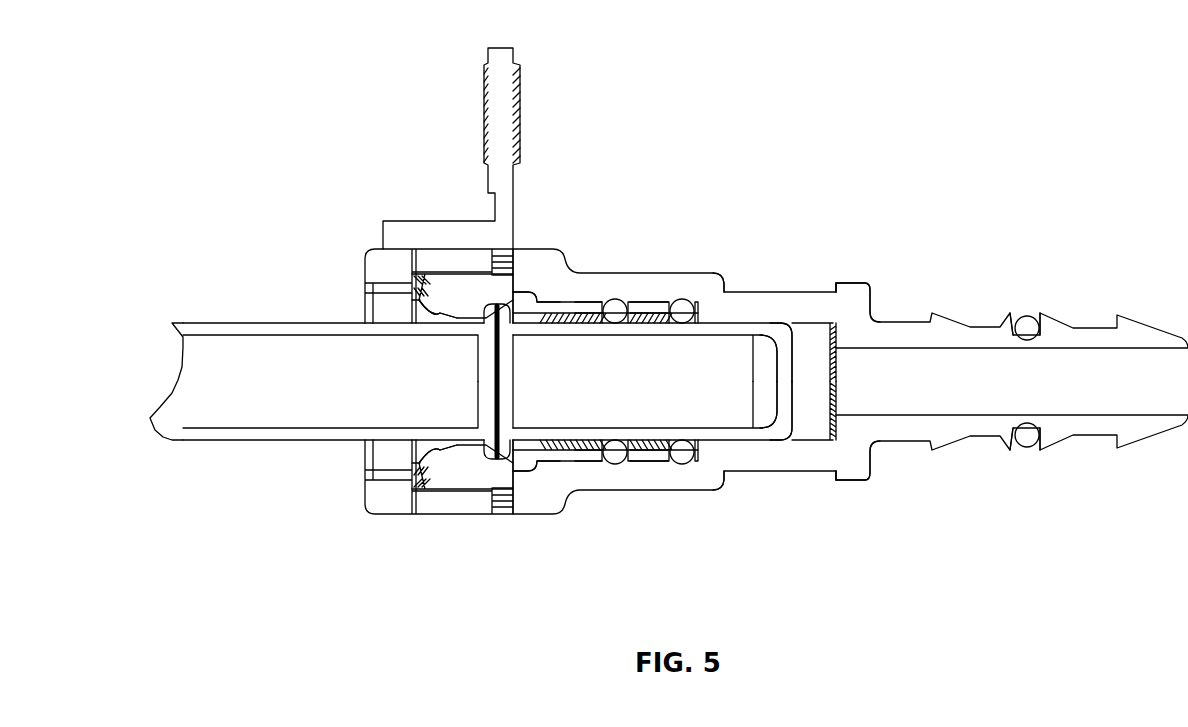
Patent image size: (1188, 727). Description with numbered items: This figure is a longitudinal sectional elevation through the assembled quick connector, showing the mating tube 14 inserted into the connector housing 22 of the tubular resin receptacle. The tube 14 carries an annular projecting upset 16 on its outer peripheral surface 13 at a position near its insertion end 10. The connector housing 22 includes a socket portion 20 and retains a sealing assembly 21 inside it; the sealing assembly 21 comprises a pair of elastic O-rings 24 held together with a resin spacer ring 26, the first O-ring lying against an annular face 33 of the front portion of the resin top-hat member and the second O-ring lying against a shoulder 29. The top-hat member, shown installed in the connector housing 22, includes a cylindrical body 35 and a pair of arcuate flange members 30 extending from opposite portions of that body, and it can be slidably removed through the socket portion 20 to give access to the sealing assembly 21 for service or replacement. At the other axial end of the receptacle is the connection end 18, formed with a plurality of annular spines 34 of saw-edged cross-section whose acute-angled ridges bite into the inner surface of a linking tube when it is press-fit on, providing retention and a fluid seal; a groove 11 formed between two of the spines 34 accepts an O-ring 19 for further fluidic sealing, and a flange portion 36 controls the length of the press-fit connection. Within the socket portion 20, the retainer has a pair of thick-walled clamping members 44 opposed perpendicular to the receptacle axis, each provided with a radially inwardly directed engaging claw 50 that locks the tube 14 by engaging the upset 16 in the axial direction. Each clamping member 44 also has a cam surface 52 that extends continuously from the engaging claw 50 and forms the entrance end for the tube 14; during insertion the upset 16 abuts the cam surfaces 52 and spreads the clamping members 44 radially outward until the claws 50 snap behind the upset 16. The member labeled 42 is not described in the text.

The insertion end 10 is at (782, 320).
The groove 11 is at (1045, 438).
The outer peripheral surface 13 is at (720, 453).
The tube 14 is at (264, 318).
The annular projecting upset 16 is at (495, 458).
The connection end 18 is at (1095, 312).
The O-ring 19 is at (1027, 316).
The socket portion 20 is at (368, 247).
The sealing assembly 21 is at (655, 290).
The connector housing 22 is at (622, 265).
The elastic O-rings 24 is at (680, 300).
The resin spacer ring 26 is at (647, 455).
The shoulder 29 is at (698, 318).
The arcuate flange members 30 is at (532, 460).
The annular face 33 is at (600, 307).
The annular spines 34 is at (1050, 318).
The cylindrical body 35 is at (585, 452).
The flange portion 36 is at (865, 482).
The clip stem 42 is at (543, 78).
The clamping members 44 is at (452, 266).
The engaging claws 50 is at (488, 306).
The cam surface 52 is at (443, 310).